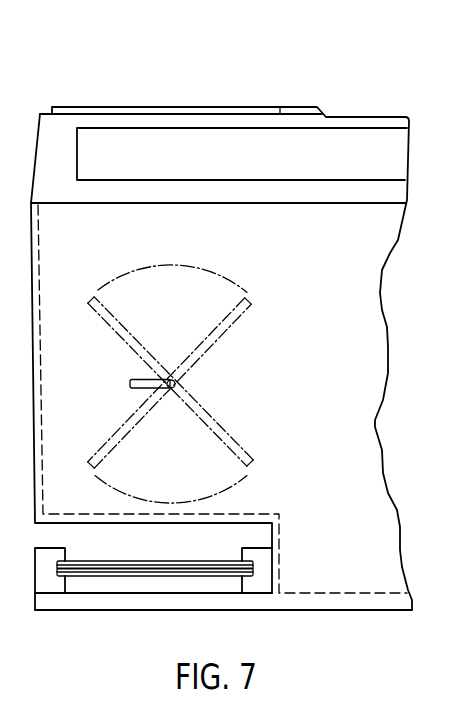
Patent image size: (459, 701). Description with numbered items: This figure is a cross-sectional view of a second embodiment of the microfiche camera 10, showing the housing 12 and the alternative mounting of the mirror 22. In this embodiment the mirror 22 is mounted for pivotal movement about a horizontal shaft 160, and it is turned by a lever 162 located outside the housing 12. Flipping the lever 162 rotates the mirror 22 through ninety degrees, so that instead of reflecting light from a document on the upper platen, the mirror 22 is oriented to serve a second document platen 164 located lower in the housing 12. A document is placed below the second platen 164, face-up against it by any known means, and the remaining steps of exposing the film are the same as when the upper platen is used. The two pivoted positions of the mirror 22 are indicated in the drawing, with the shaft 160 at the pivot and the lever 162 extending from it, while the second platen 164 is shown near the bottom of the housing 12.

The microfiche camera 10 is at (315, 96).
The housing 12 is at (380, 118).
The mirror 22 is at (232, 327).
The horizontal shaft 160 is at (176, 383).
The lever 162 is at (133, 379).
The second document platen 164 is at (130, 577).